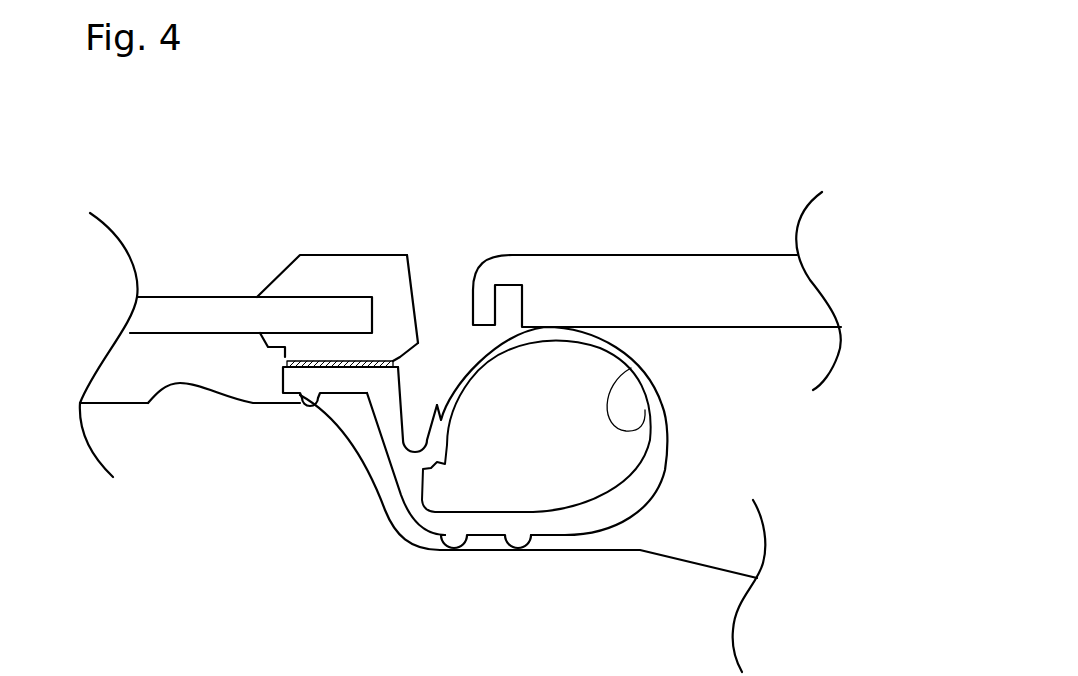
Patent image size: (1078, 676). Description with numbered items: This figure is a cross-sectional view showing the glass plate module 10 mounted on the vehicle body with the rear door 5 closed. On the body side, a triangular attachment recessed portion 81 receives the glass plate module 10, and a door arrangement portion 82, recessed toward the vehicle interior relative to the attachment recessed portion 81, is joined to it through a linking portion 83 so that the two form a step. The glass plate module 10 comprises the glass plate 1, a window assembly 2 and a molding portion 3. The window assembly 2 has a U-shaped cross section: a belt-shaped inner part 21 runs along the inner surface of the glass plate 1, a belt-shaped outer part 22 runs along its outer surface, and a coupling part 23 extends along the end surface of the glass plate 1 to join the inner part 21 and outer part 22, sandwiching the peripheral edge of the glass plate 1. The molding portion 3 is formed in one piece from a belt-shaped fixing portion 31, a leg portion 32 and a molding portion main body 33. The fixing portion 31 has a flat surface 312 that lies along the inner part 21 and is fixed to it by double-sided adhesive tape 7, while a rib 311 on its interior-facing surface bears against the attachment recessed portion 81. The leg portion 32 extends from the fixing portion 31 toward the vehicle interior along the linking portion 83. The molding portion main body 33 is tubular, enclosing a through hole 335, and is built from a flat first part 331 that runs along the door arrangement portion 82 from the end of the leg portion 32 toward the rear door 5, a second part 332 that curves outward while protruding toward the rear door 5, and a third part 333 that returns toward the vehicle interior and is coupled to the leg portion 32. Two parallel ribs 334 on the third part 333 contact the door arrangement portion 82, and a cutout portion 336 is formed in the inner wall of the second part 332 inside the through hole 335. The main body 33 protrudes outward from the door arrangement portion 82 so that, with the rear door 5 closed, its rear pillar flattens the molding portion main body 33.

The glass plate module 10 is at (303, 162).
The glass plate 1 is at (207, 312).
The window assembly 2 is at (297, 254).
The outer part 22 is at (342, 273).
The coupling part 23 is at (403, 303).
The inner part 21 is at (312, 351).
The flat surface 312 is at (350, 358).
The rib 311 is at (308, 398).
The fixing portion 31 is at (352, 382).
The leg portion 32 is at (390, 423).
The molding portion main body 33 is at (613, 509).
The first part 331 is at (554, 524).
The second part 332 is at (655, 456).
The third part 333 is at (470, 372).
The ribs 334 is at (520, 546).
The through hole 335 is at (550, 424).
The cutout portion 336 is at (643, 430).
The molding portion 3 is at (717, 378).
The rear door 5 is at (692, 255).
The double-sided adhesive tape 7 is at (300, 373).
The attachment recessed portion 81 is at (128, 403).
The door arrangement portion 82 is at (590, 550).
The linking portion 83 is at (370, 485).